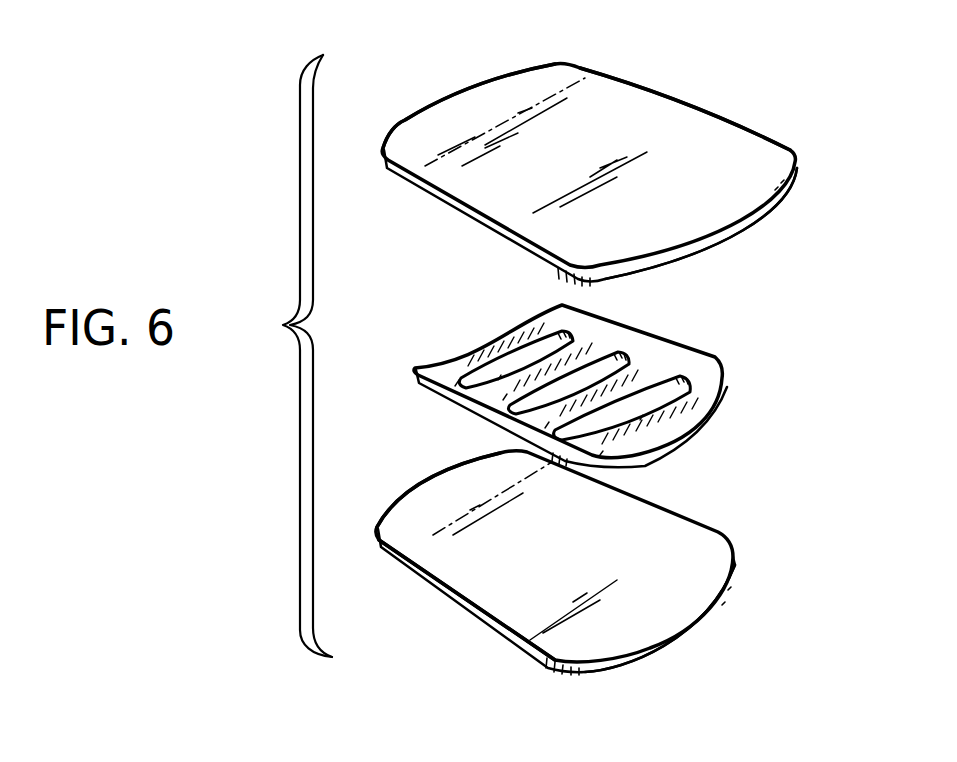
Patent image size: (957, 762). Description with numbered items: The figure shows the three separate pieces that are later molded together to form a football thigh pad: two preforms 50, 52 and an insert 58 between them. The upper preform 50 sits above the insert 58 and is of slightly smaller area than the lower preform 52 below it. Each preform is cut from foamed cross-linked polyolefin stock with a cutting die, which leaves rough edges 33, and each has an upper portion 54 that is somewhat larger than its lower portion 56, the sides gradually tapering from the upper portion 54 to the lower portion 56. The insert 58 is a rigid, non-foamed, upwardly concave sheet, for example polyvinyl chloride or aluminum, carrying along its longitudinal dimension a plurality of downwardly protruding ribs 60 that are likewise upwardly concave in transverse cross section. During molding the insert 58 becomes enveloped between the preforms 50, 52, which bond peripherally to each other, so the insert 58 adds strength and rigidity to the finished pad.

The preform 50 is at (603, 100).
The preform 52 is at (682, 568).
The insert 58 is at (630, 381).
The ribs 60 is at (565, 332).
The lower portion 56 is at (437, 100).
The rough edges 33 is at (717, 112).
The upper portion 54 is at (760, 209).